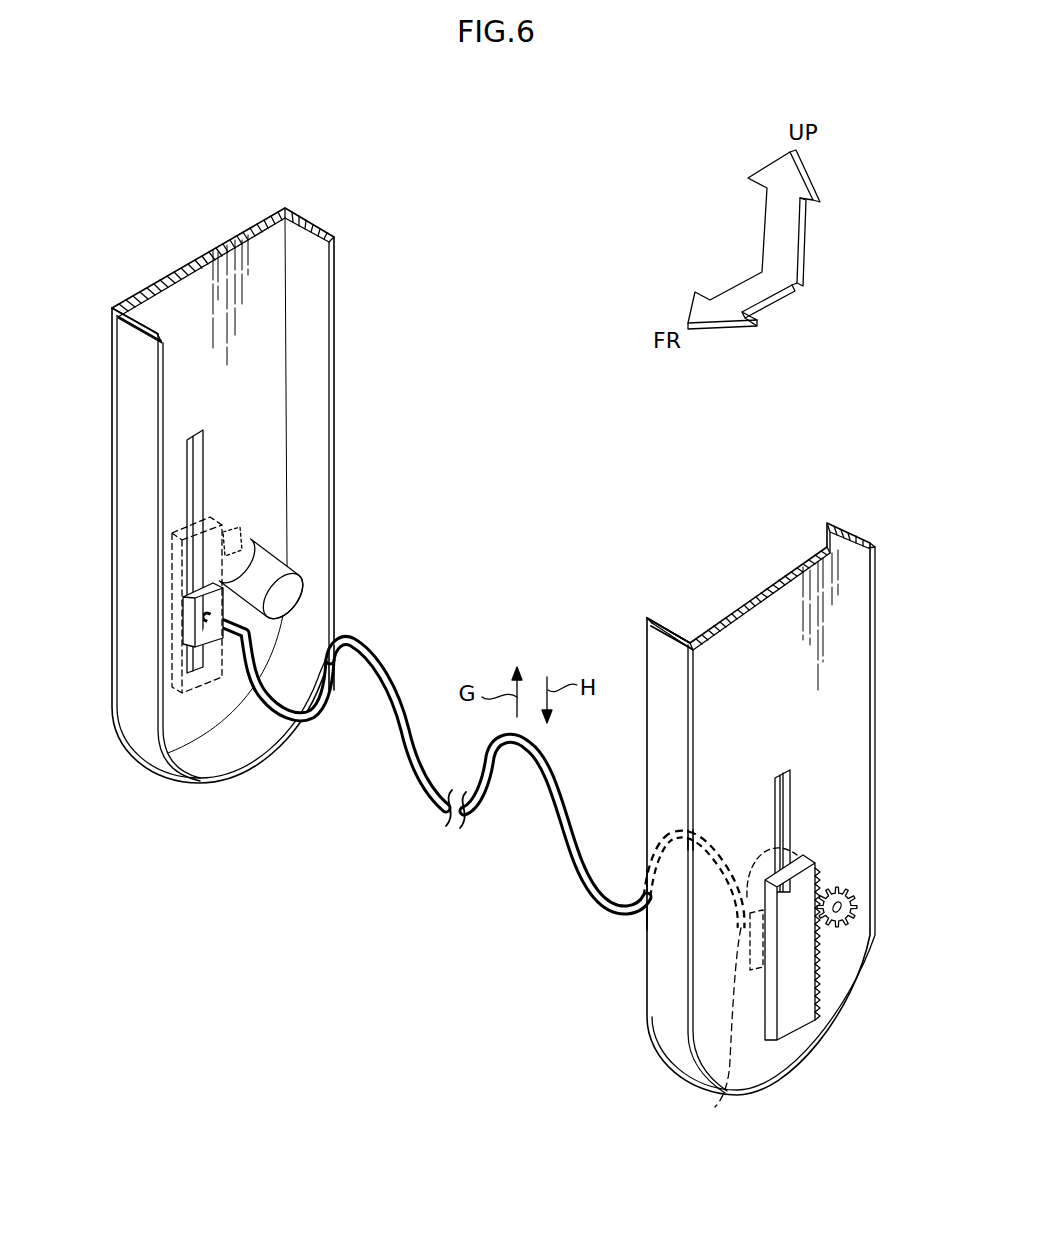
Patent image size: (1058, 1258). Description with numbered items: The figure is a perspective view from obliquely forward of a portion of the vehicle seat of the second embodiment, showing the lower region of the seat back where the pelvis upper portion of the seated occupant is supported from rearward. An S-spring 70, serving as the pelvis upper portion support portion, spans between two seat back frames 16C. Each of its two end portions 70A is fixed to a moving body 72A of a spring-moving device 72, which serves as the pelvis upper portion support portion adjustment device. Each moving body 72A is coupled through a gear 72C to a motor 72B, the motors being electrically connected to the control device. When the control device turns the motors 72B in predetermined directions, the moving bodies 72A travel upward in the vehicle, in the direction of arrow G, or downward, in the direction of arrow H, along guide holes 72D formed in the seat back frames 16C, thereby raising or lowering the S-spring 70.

The seat back frame 16C is at (340, 297).
The S-spring 70 is at (398, 665).
The end portion of the S-spring 70A is at (210, 632).
The spring-moving device 72 is at (258, 537).
The moving body 72A is at (173, 577).
The motor 72B is at (263, 567).
The gear 72C is at (240, 530).
The guide hole 72D is at (200, 450).